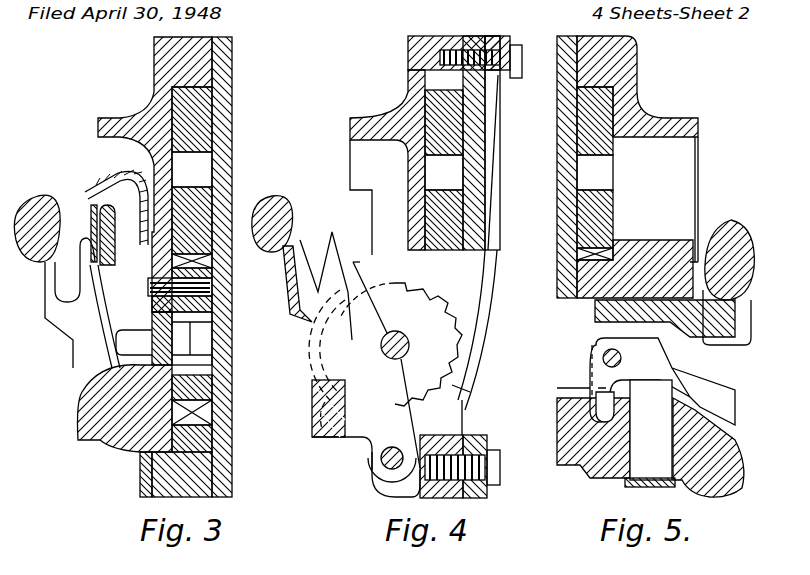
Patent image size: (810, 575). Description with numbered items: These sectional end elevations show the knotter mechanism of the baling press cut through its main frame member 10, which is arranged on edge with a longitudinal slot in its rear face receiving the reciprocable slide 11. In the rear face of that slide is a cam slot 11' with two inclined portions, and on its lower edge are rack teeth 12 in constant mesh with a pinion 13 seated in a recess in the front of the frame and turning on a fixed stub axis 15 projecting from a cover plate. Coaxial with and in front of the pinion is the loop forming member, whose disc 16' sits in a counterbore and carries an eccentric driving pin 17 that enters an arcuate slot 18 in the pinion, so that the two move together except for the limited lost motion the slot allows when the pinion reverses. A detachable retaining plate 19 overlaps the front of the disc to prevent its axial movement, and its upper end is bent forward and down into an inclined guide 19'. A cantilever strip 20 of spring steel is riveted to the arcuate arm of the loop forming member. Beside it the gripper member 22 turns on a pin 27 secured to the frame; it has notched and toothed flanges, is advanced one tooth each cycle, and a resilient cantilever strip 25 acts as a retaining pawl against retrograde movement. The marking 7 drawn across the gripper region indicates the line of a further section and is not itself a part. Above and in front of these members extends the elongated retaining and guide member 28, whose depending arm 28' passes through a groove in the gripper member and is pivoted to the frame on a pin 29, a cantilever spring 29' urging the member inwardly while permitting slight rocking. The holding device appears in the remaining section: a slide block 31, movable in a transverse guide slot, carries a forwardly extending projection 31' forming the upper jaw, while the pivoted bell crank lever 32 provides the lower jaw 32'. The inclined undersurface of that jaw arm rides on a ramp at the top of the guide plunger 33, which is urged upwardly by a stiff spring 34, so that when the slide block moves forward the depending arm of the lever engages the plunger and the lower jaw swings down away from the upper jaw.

In FIG. 3, the main frame member 10 is at (155, 100).
In FIG. 4, the main frame member 10 is at (408, 104).
In FIG. 5, the main frame member 10 is at (635, 106).
In FIG. 3, the reciprocable slide 11 is at (224, 170).
In FIG. 5, the reciprocable slide 11 is at (620, 167).
In FIG. 3, the cam slot 11' is at (226, 168).
In FIG. 3, the rack teeth 12 is at (200, 258).
In FIG. 5, the rack teeth 12 is at (615, 250).
In FIG. 3, the pinion 13 is at (195, 412).
In FIG. 3, the fixed stub axis 15 is at (200, 375).
In FIG. 3, the disc 16' is at (141, 474).
In FIG. 3, the eccentric driving pin 17 is at (152, 288).
In FIG. 3, the arcuate slot 18 is at (158, 302).
In FIG. 3, the retaining plate 19 is at (115, 343).
In FIG. 3, the inclined guide 19' is at (102, 171).
In FIG. 3, the cantilever strip 20 is at (91, 226).
In FIG. 3, the retaining and guide member 28 is at (38, 208).
In FIG. 4, the section line 7 is at (393, 270).
In FIG. 4, the gripper member 22 is at (401, 344).
In FIG. 4, the retaining pawl 25 is at (492, 280).
In FIG. 4, the pin 27 is at (402, 334).
In FIG. 4, the depending arm 28' is at (320, 313).
In FIG. 4, the pin 29 is at (362, 472).
In FIG. 4, the cantilever spring 29' is at (341, 438).
In FIG. 5, the slide block 31 is at (634, 322).
In FIG. 5, the forwardly extending projection 31' is at (750, 282).
In FIG. 5, the bell crank lever 32 is at (623, 380).
In FIG. 5, the lower jaw 32' is at (727, 396).
In FIG. 5, the guide plunger 33 is at (687, 438).
In FIG. 5, the stiff spring 34 is at (625, 483).